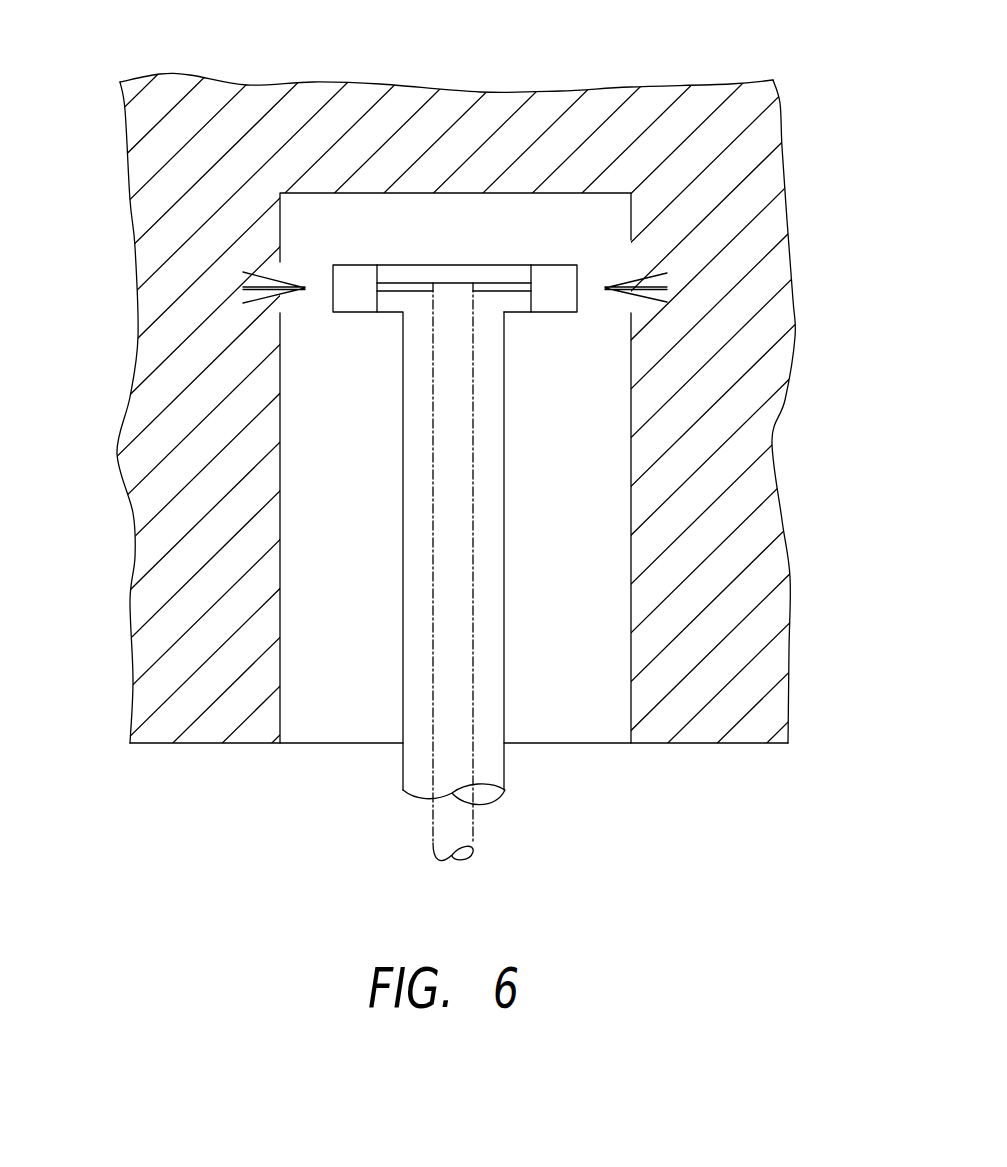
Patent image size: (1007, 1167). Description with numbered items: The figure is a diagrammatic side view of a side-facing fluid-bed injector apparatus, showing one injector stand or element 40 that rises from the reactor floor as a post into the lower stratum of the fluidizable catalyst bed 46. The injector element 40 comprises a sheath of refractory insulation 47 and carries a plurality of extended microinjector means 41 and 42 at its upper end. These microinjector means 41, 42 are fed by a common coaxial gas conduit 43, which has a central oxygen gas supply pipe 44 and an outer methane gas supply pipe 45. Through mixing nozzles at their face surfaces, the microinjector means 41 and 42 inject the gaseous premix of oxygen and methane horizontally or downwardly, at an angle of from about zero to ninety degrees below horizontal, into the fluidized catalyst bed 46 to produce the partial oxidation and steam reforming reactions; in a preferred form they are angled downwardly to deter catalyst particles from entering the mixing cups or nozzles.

The injector element 40 is at (632, 442).
The microinjector means 41 is at (553, 280).
The microinjector means 42 is at (350, 275).
The coaxial gas conduit 43 is at (505, 590).
The central oxygen gas supply pipe 44 is at (442, 666).
The outer methane gas supply pipe 45 is at (420, 560).
The fluidizable catalyst bed 46 is at (763, 202).
The sheath of refractory insulation 47 is at (335, 445).